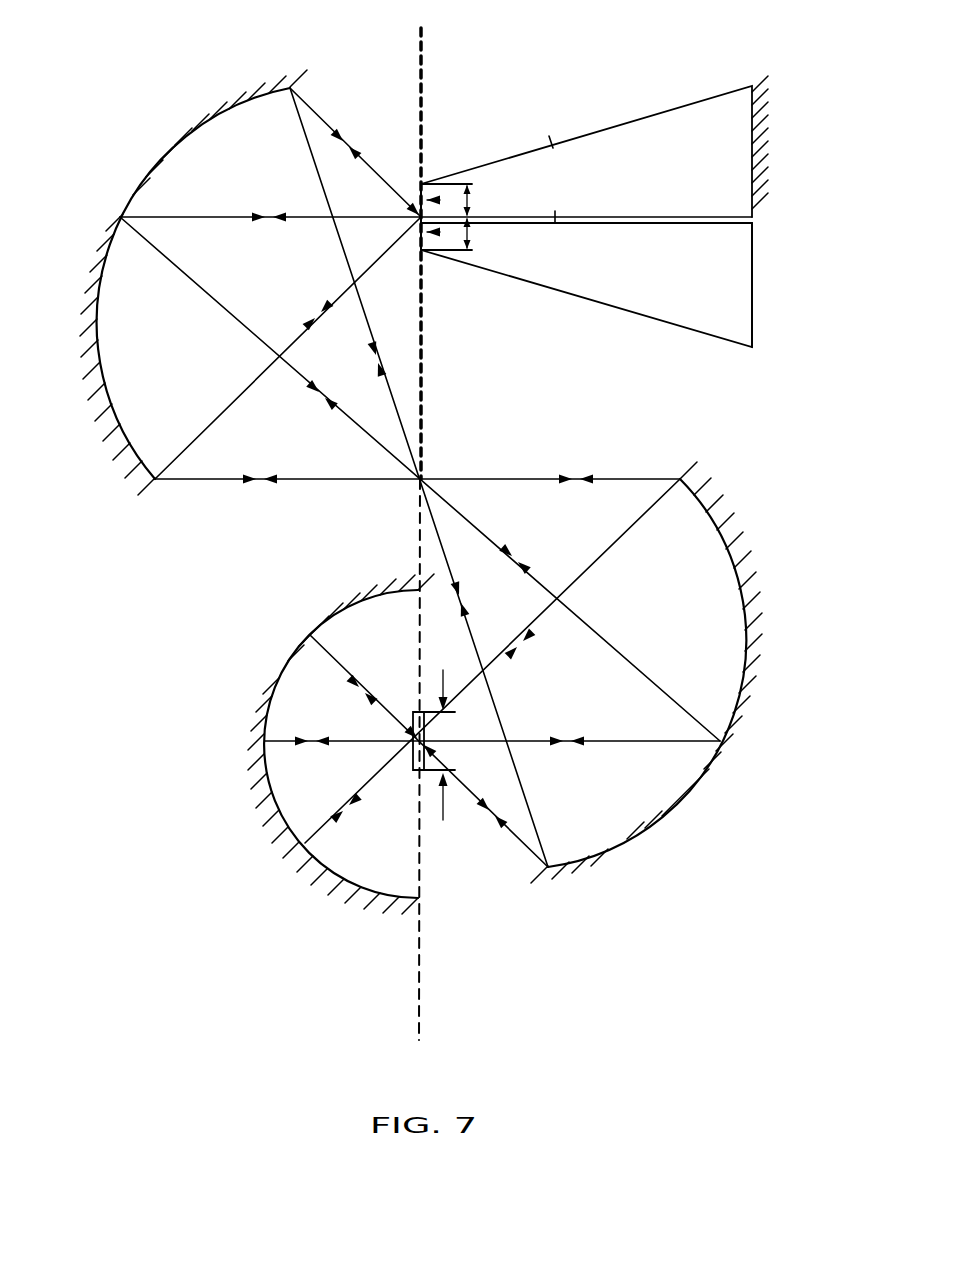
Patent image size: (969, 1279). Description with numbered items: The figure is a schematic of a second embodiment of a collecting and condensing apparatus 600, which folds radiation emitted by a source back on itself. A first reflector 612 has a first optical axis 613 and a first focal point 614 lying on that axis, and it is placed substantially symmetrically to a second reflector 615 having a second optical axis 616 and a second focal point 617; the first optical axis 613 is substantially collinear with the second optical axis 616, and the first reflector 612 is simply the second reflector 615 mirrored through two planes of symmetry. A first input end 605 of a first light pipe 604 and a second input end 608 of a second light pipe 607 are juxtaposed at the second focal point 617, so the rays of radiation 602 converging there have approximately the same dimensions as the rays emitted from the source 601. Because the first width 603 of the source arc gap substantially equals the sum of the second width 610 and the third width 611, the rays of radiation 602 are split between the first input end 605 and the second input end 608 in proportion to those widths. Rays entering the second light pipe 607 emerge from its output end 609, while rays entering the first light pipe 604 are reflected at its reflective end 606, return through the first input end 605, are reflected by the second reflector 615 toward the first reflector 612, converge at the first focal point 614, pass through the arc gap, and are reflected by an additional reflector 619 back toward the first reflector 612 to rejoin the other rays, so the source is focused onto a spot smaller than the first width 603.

The collecting and condensing apparatus 600 is at (635, 930).
The source 601 is at (443, 810).
The rays of radiation 602 is at (615, 478).
The first width 603 is at (443, 676).
The first light pipe 604 is at (605, 130).
The first input end 605 is at (432, 200).
The reflective end 606 is at (762, 155).
The second light pipe 607 is at (580, 298).
The second input end 608 is at (432, 232).
The output end 609 is at (755, 295).
The second width 610 is at (472, 201).
The third width 611 is at (472, 234).
The first reflector 612 is at (712, 775).
The first optical axis 613 is at (422, 1000).
The first focal point 614 is at (411, 716).
The second reflector 615 is at (97, 392).
The second optical axis 616 is at (424, 96).
The second focal point 617 is at (410, 196).
The additional reflector 619 is at (264, 783).